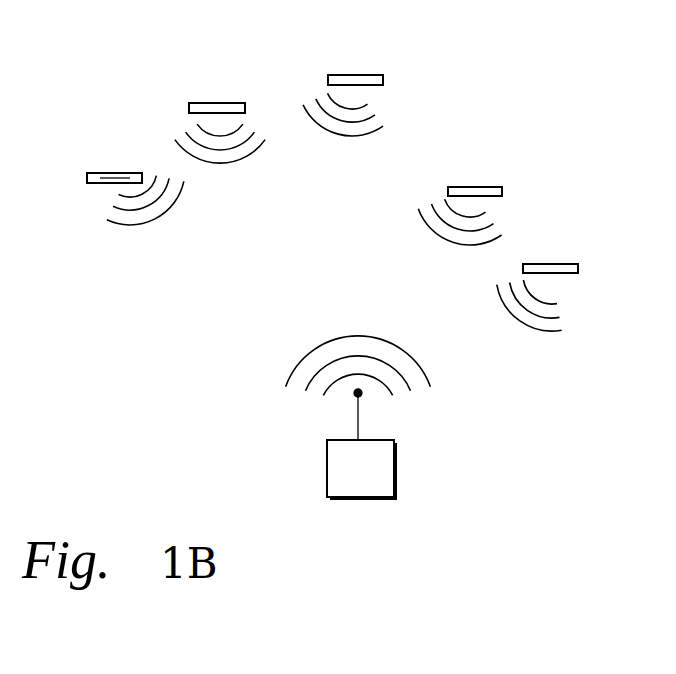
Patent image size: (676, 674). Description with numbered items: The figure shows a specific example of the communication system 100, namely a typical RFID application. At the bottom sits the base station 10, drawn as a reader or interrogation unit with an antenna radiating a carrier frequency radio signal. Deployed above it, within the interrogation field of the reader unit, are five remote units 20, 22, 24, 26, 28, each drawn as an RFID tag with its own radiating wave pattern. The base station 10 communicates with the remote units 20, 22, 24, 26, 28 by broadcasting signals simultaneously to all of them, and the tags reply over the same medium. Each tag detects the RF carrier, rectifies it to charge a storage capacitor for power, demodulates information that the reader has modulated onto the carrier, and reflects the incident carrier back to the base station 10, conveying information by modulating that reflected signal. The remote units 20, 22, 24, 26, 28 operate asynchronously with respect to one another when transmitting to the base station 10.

The communication system 100 is at (598, 35).
The base station 10 is at (377, 478).
The remote unit 20 is at (88, 179).
The remote unit 22 is at (190, 108).
The remote unit 24 is at (329, 82).
The remote unit 26 is at (502, 191).
The remote unit 28 is at (578, 268).